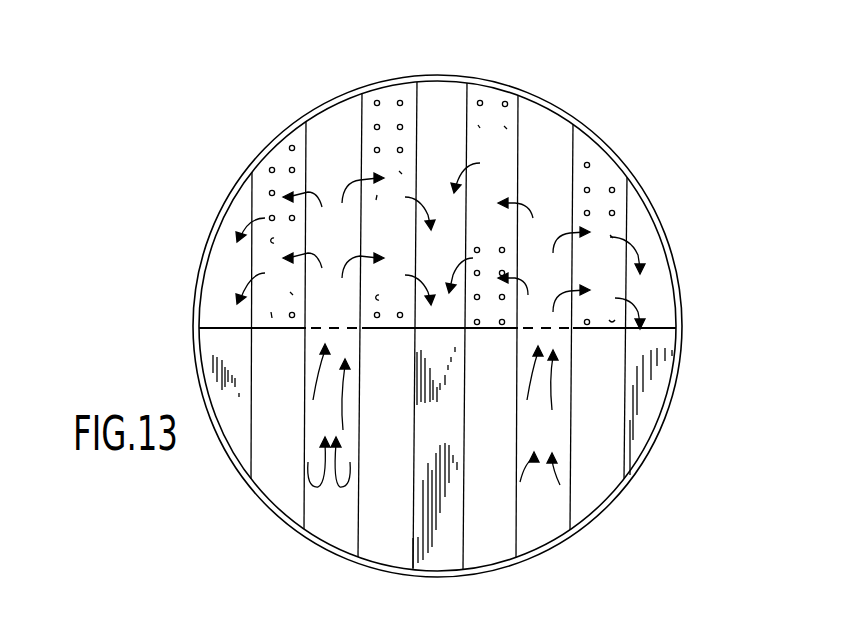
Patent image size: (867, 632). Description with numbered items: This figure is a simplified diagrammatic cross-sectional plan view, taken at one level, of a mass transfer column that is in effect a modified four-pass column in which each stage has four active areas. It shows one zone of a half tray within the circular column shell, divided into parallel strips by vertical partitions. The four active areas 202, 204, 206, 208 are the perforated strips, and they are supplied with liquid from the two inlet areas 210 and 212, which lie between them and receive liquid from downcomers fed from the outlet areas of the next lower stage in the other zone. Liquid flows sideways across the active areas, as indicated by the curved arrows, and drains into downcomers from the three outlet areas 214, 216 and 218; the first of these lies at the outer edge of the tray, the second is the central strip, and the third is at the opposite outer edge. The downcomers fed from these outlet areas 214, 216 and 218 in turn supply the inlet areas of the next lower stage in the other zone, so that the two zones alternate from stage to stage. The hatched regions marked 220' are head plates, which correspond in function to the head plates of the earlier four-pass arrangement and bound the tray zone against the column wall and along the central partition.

The active area 202 is at (287, 157).
The active area 204 is at (390, 100).
The active area 206 is at (487, 97).
The active area 208 is at (597, 167).
The inlet area 210 is at (337, 125).
The inlet area 212 is at (547, 125).
The outlet area 214 is at (240, 210).
The outlet area 216 is at (440, 103).
The outlet area 218 is at (640, 225).
The head plate 220' is at (470, 484).